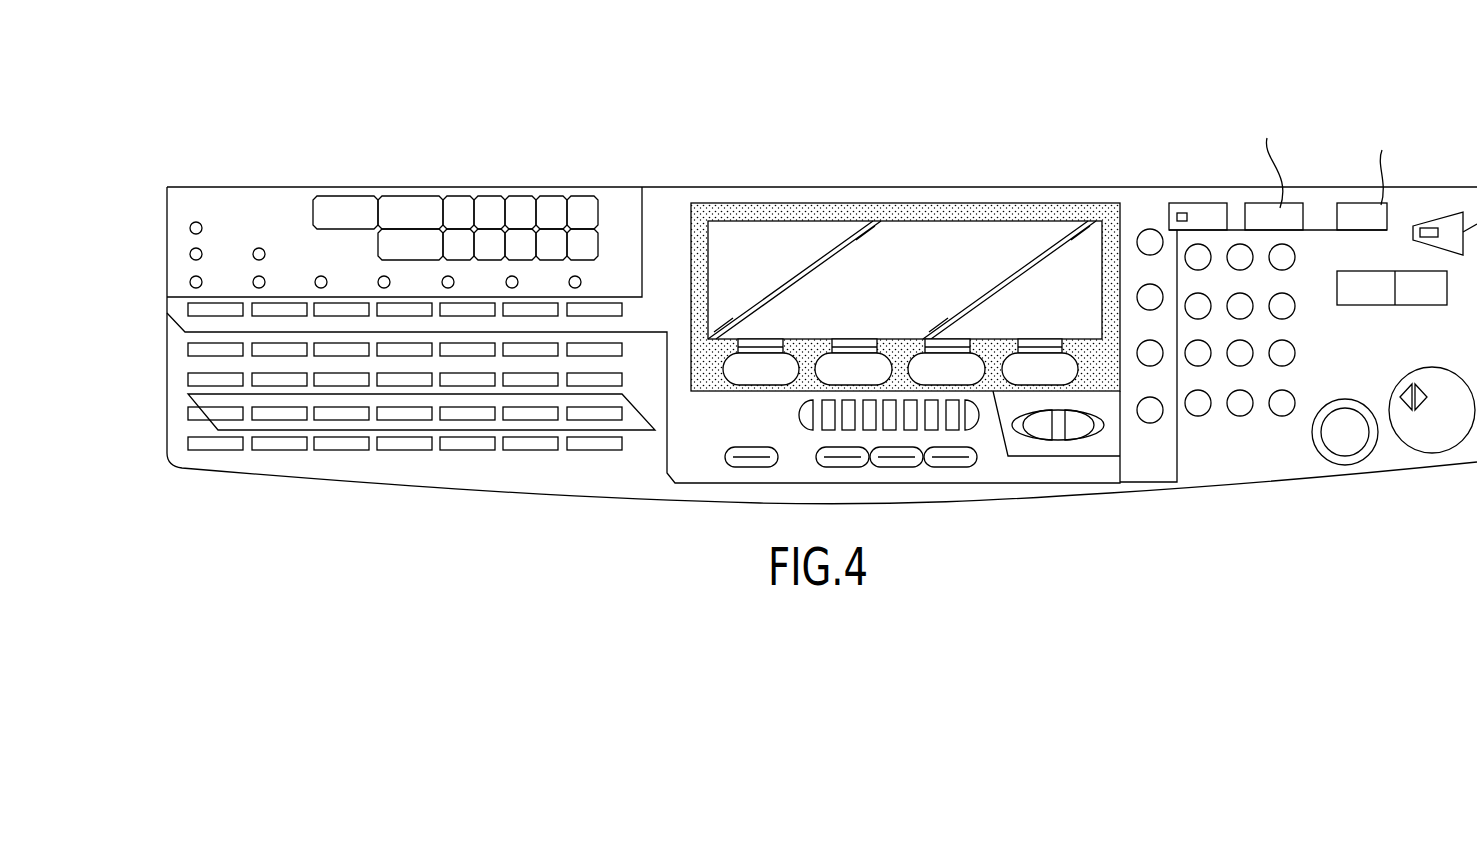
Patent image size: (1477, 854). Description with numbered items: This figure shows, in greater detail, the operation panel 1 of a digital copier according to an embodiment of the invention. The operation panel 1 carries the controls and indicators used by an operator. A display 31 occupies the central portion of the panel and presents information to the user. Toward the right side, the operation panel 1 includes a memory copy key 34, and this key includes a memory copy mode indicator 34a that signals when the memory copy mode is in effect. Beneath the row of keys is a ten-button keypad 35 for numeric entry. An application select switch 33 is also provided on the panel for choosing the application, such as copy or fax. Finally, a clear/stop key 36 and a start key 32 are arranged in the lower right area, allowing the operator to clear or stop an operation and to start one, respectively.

The operation panel 1 is at (737, 159).
The display 31 is at (963, 237).
The memory copy key 34 is at (1208, 217).
The memory copy mode indicator 34a is at (1176, 216).
The 10-button keypad 35 is at (1308, 272).
The application select switch 33 is at (1380, 310).
The clear/stop key 36 is at (1343, 435).
The start key 32 is at (1427, 433).